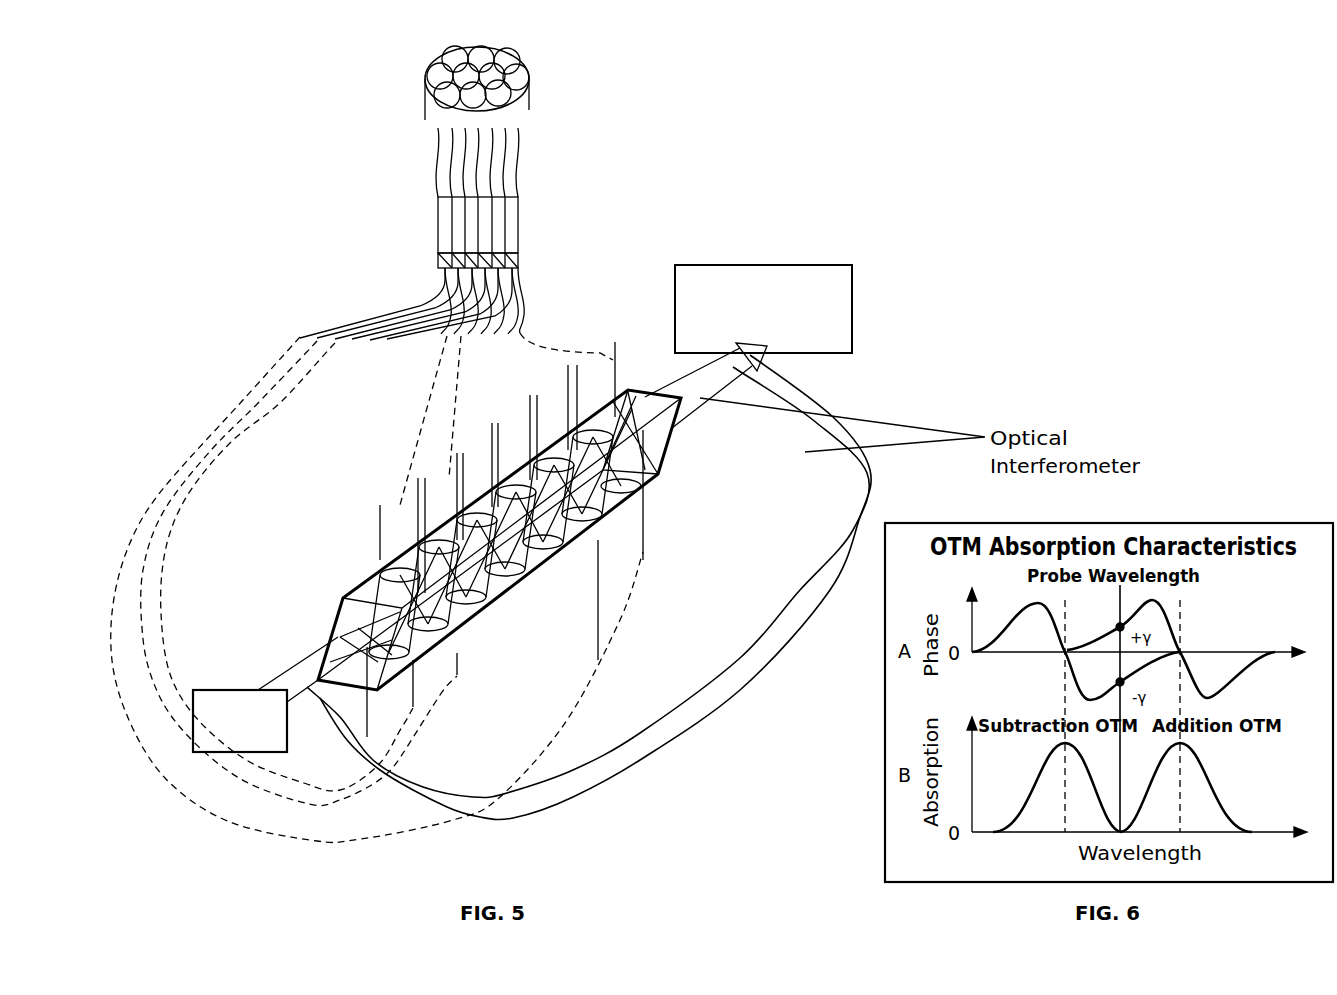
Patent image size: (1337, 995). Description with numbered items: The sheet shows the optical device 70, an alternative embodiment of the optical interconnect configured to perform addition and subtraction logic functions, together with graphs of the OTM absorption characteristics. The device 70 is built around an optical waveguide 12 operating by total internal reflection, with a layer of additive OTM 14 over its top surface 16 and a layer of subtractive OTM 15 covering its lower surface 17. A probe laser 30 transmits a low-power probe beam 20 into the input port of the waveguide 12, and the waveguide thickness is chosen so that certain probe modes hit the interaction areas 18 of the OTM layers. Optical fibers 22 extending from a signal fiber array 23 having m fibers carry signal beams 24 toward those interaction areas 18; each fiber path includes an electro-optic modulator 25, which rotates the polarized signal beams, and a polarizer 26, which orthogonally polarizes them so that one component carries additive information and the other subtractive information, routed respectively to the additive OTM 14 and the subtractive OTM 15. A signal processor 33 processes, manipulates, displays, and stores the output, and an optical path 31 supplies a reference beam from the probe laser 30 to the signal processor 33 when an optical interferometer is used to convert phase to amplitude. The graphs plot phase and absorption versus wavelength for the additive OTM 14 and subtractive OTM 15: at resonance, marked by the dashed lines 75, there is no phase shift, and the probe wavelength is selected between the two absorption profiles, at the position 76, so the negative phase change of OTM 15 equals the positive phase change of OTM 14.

In FIG. 5, the optical device 70 is at (256, 122).
In FIG. 5, the signal fiber array 23 is at (530, 70).
In FIG. 5, the electro-optic modulator 25 is at (515, 210).
In FIG. 5, the polarizer 26 is at (520, 262).
In FIG. 5, the optical fibers 22 is at (385, 298).
In FIG. 5, the signal beams 24 is at (452, 428).
In FIG. 5, the signal processor 33 is at (793, 352).
In FIG. 5, the optical waveguide 12 is at (340, 624).
In FIG. 5, the top surface 16 is at (343, 598).
In FIG. 5, the additive OTM 14 is at (362, 597).
In FIG. 6, the additive OTM 14 is at (1165, 610).
In FIG. 5, the subtractive OTM 15 is at (643, 477).
In FIG. 6, the subtractive OTM 15 is at (1147, 662).
In FIG. 5, the lower surface 17 is at (658, 471).
In FIG. 5, the interaction areas 18 is at (390, 562).
In FIG. 5, the probe beam 20 is at (297, 662).
In FIG. 5, the probe laser 30 is at (268, 752).
In FIG. 5, the optical path 31 is at (647, 760).
In FIG. 6, the dashed lines 75 is at (1065, 833).
In FIG. 6, the probe wavelength position 76 is at (1182, 833).